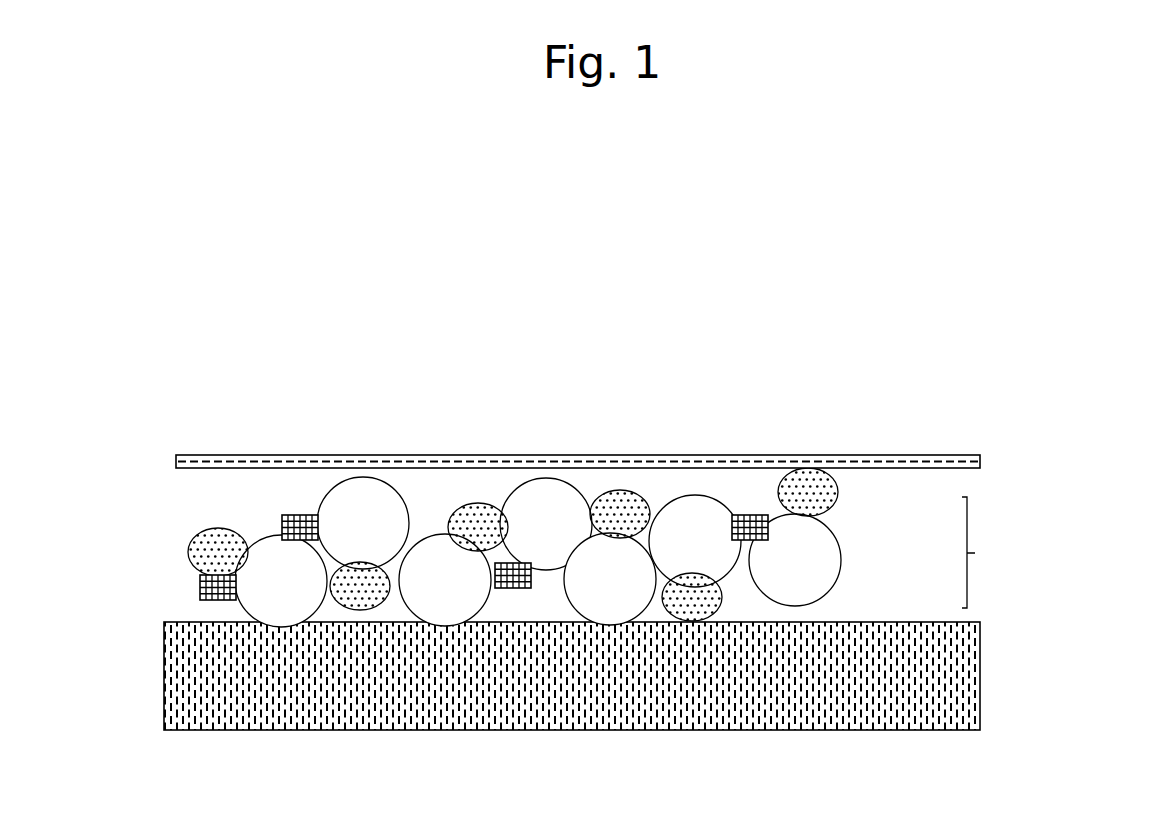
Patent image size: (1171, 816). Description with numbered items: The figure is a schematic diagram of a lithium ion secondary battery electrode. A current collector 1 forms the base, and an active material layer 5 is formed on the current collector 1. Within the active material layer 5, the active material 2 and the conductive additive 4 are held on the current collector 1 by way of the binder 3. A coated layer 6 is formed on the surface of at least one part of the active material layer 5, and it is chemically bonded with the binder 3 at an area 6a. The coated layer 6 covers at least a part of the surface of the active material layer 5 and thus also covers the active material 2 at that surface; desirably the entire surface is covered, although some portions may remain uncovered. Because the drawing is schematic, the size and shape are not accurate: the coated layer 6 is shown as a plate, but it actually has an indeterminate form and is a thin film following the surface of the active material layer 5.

The current collector 1 is at (957, 710).
The active material 2 is at (548, 515).
The binder 3 is at (215, 528).
The conductive additive 4 is at (300, 515).
The active material layer 5 is at (975, 553).
The coated layer 6 is at (898, 462).
The area 6a is at (813, 466).